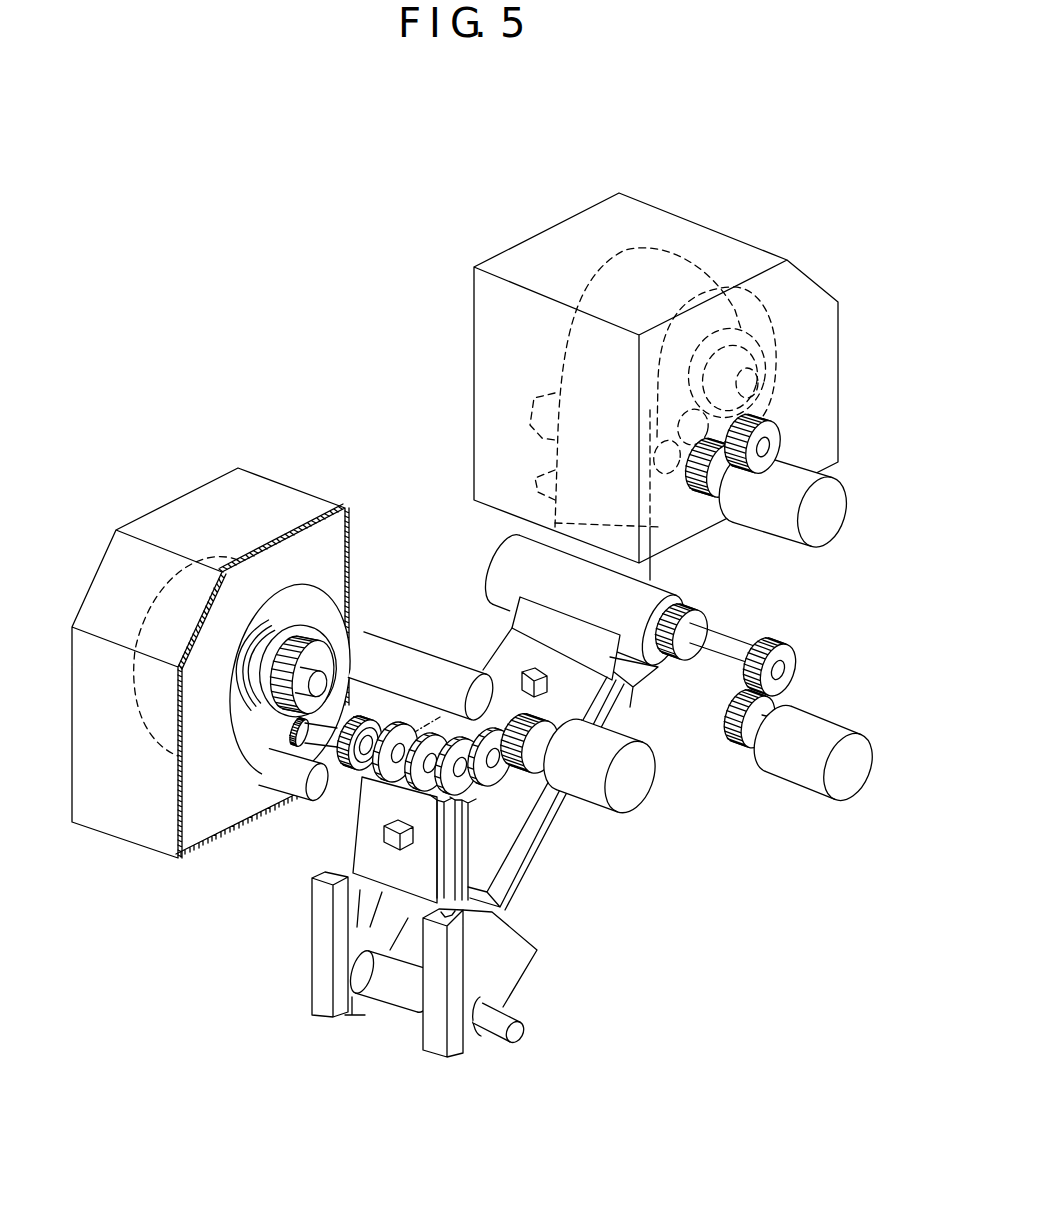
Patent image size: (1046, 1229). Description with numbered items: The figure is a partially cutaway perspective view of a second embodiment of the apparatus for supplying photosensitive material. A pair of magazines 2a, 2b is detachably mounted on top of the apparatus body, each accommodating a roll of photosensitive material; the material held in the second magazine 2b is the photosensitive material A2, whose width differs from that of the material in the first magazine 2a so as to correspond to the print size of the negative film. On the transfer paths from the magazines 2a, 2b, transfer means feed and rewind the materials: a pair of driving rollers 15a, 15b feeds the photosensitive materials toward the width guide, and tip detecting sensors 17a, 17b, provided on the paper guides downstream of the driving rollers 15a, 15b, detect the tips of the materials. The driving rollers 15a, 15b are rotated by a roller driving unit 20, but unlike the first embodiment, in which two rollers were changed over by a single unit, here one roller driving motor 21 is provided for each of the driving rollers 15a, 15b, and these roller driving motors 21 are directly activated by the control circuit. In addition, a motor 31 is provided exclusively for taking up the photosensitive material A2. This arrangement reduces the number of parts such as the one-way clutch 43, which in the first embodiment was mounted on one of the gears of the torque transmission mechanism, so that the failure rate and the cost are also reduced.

The magazine 2a is at (138, 526).
The magazine 2b is at (540, 240).
The driving roller 15a is at (426, 662).
The driving roller 15b is at (510, 570).
The tip detecting sensor 17a is at (413, 838).
The tip detecting sensor 17b is at (547, 683).
The roller driving unit 20 is at (347, 823).
The roller driving motor 21 is at (633, 797).
The motor 31 is at (840, 511).
The one-way clutch 43 is at (348, 772).
The photosensitive material A2 is at (652, 575).